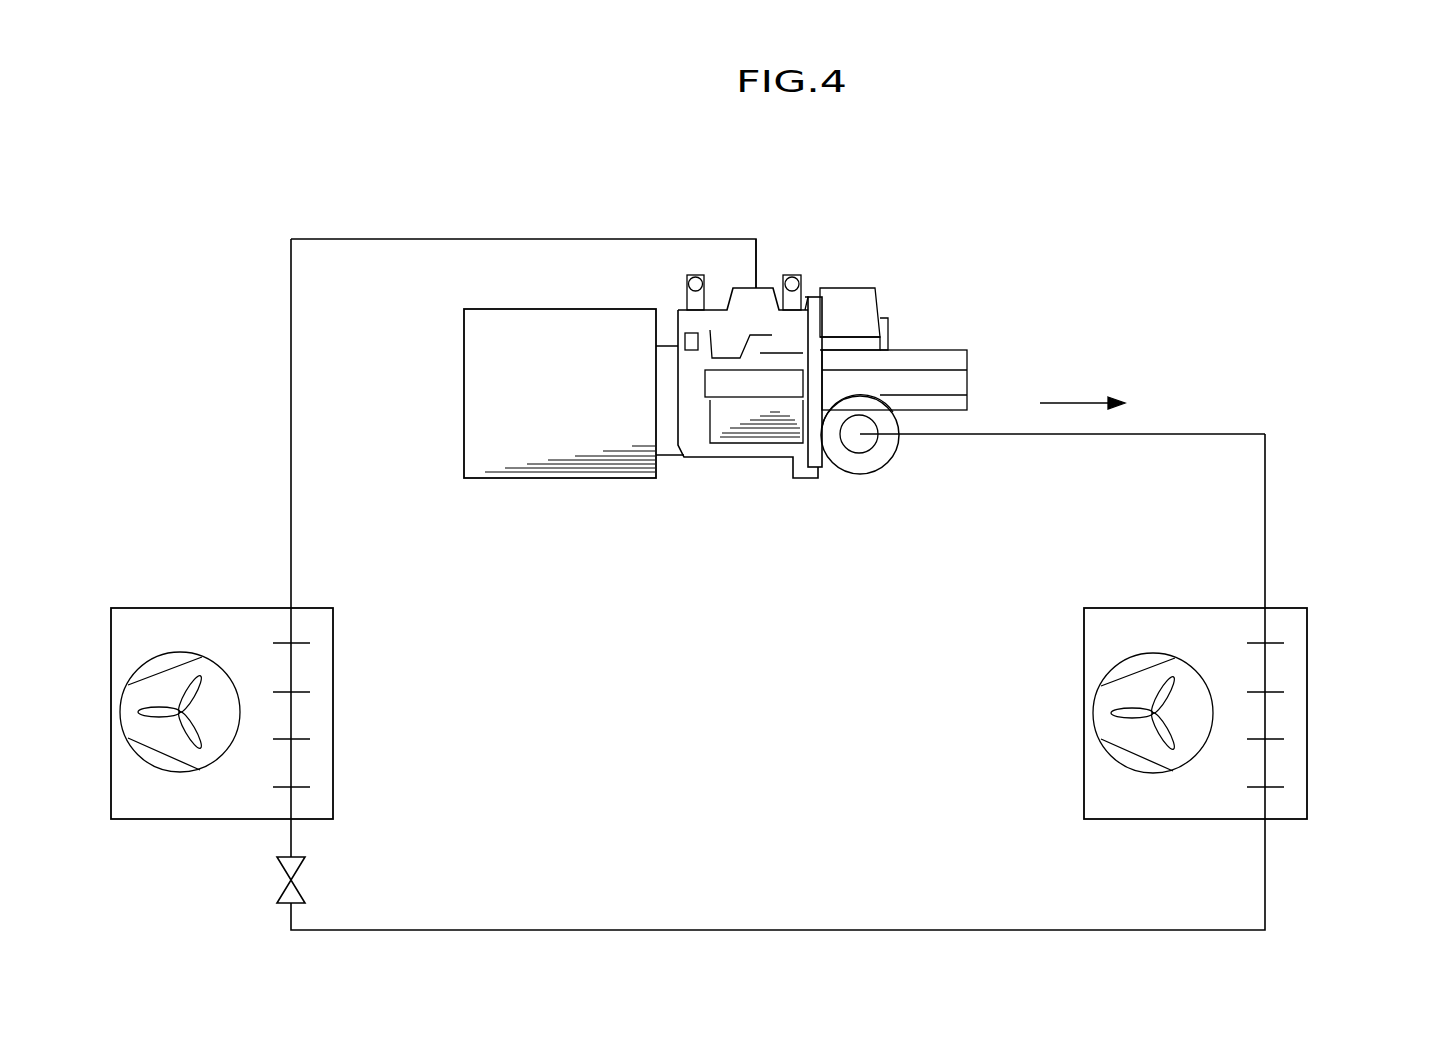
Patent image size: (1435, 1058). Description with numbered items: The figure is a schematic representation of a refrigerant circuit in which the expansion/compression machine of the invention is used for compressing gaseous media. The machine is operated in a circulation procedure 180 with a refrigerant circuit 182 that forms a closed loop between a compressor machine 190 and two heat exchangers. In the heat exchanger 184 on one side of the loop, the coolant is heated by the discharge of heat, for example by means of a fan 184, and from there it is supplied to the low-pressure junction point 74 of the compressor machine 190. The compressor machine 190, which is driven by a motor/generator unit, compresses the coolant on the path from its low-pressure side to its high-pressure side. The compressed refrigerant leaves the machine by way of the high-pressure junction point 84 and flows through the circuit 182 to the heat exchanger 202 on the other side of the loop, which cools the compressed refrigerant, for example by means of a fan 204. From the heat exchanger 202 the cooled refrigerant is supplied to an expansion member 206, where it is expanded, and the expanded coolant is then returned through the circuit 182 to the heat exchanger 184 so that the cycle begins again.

The low-pressure junction point 74 is at (756, 248).
The circulation procedure 180 is at (1163, 366).
The refrigerant circuit 182 is at (1215, 433).
The heat exchanger 184 is at (170, 678).
The compressor 190 is at (869, 274).
The high-pressure junction point 84 is at (861, 438).
The heat exchanger 202 is at (1283, 715).
The fan 204 is at (1145, 685).
The expansion member 206 is at (289, 892).